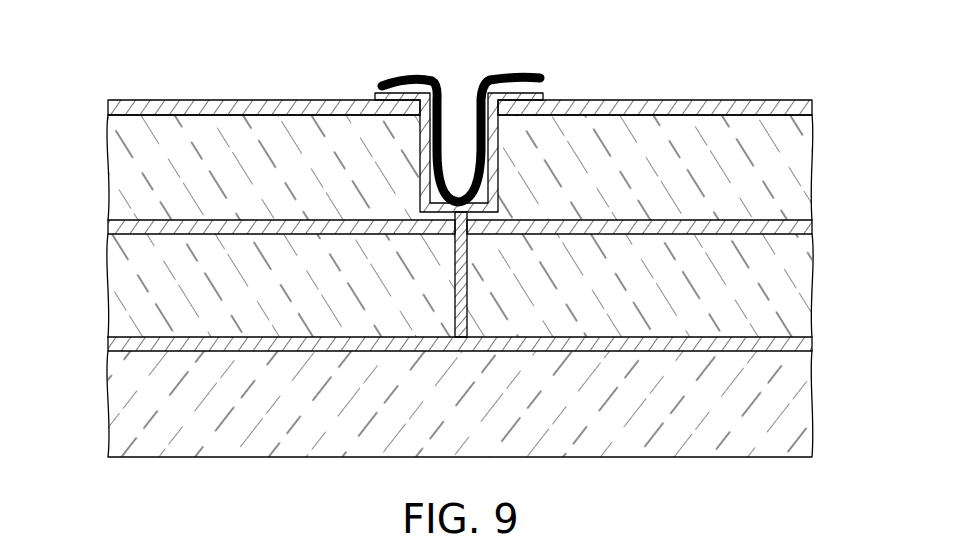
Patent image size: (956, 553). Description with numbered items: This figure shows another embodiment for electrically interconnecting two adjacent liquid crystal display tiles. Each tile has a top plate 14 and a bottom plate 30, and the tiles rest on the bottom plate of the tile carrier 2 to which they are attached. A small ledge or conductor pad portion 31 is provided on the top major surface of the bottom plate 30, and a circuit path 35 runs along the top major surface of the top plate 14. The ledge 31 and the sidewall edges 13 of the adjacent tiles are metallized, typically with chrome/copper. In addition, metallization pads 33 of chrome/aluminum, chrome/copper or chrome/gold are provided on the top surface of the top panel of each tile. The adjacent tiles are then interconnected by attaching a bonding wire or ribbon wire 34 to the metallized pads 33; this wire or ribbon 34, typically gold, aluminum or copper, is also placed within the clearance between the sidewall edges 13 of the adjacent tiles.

The bottom plate of the tile carrier 2 is at (701, 406).
The sidewall edge metallization land 13 is at (498, 172).
The top plate 14 is at (702, 183).
The bottom plate 30 is at (704, 295).
The ledge 31 is at (432, 221).
The metallization pads 33 is at (378, 93).
The wire or ribbon 34 is at (480, 78).
The circuit path 35 is at (150, 100).